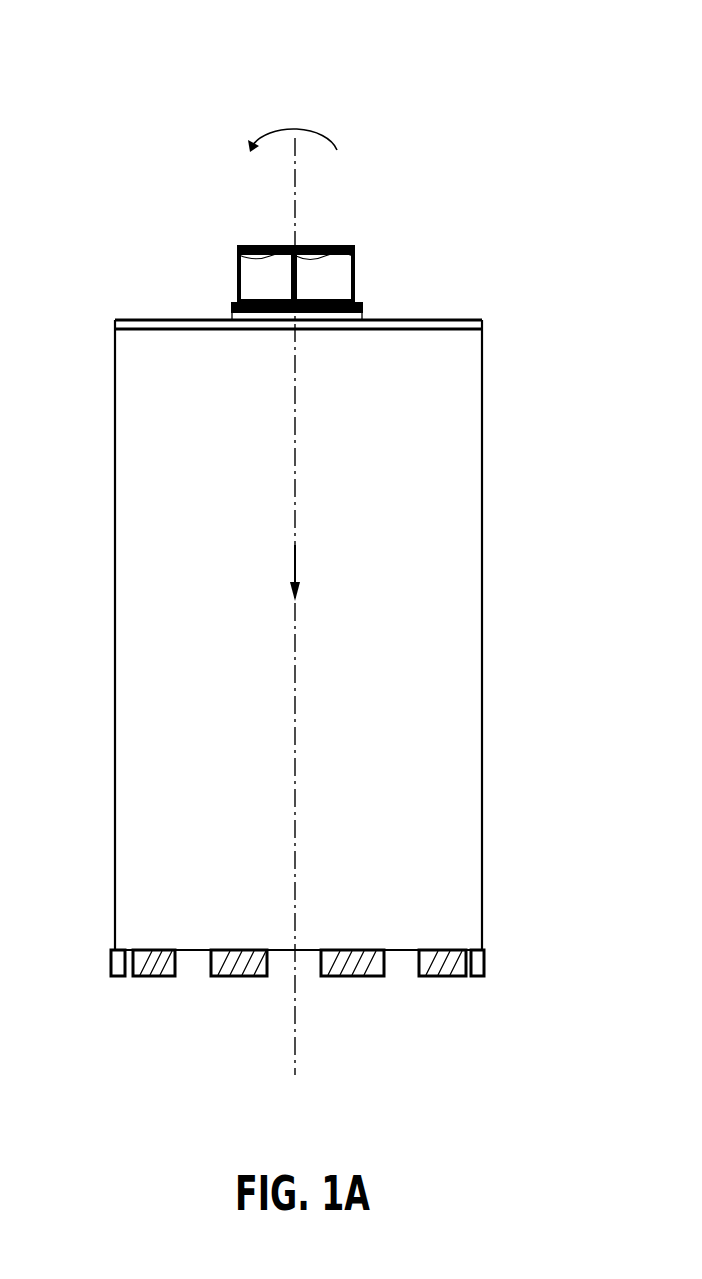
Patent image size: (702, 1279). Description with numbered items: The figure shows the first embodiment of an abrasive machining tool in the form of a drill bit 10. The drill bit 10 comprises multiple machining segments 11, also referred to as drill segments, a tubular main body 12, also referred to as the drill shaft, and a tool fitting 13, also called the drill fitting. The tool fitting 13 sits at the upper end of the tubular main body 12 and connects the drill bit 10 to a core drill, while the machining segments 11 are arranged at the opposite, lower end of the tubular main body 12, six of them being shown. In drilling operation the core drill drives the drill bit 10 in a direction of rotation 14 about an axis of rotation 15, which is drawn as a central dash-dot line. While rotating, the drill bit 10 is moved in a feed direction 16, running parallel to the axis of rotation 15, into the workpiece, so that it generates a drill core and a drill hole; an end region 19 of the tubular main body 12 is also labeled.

The drill bit 10 is at (104, 105).
The machining segments 11 is at (118, 978).
The tubular main body 12 is at (482, 608).
The tool fitting 13 is at (246, 279).
The direction of rotation 14 is at (292, 111).
The axis of rotation 15 is at (297, 186).
The feed direction 16 is at (292, 570).
The end rim / flange 19 is at (114, 329).